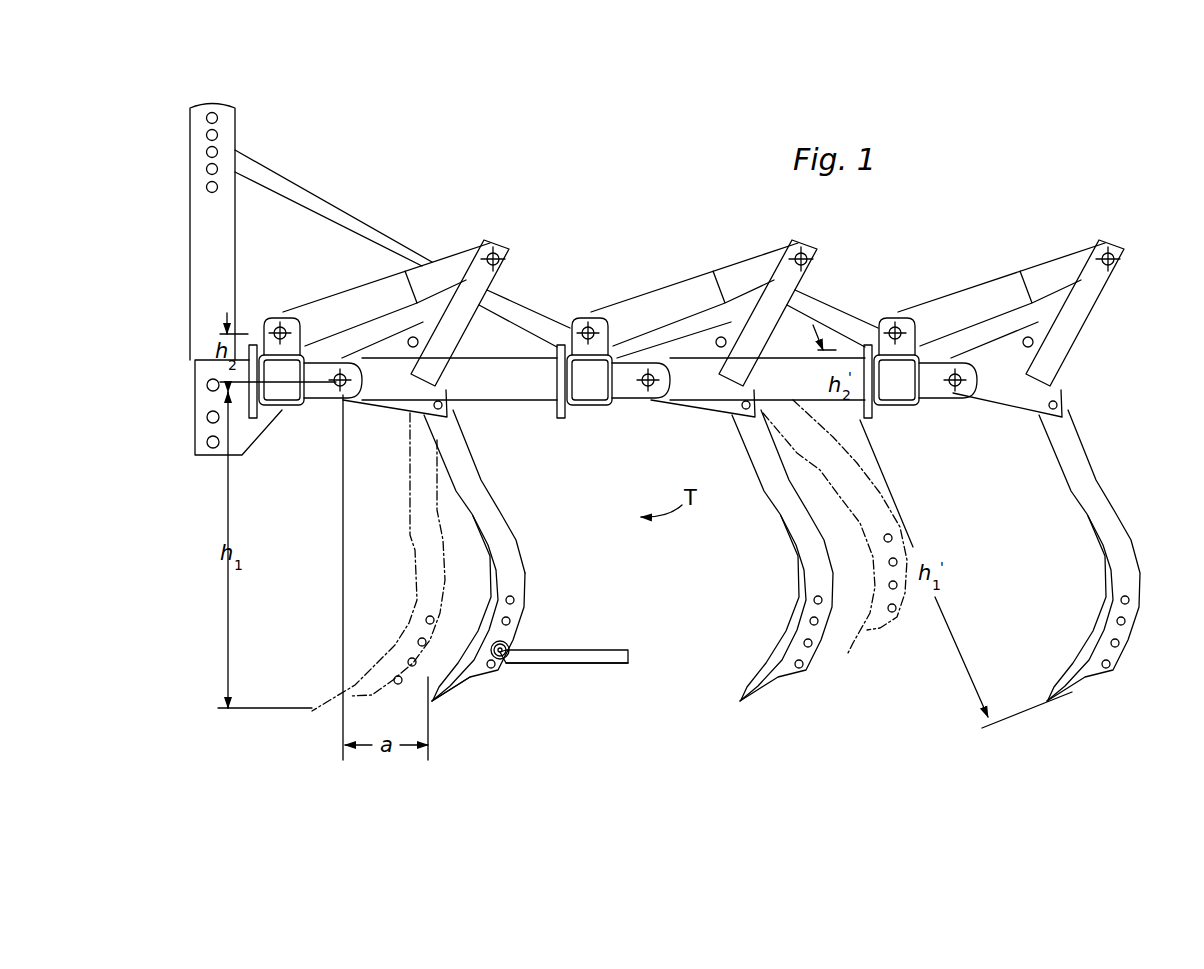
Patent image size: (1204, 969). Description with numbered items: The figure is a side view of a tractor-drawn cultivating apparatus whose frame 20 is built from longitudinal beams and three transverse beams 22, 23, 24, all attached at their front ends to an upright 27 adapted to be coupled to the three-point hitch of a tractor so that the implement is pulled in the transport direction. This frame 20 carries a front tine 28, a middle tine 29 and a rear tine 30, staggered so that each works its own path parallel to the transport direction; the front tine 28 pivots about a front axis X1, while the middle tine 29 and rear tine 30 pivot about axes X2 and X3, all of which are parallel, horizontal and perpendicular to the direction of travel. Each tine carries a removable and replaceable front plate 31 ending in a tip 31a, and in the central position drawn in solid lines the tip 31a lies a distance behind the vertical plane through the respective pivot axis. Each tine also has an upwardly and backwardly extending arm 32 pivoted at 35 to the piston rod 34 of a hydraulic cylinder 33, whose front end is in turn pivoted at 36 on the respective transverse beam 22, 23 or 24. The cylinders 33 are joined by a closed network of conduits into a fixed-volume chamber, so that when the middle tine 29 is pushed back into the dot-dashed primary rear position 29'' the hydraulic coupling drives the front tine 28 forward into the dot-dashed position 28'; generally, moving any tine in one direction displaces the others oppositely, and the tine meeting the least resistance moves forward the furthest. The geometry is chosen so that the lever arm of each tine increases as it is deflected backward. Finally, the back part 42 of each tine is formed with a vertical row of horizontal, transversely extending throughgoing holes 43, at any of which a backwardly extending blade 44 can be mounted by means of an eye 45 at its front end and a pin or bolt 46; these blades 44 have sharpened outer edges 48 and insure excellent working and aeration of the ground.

The frame 20 is at (518, 406).
The transverse beam 22 is at (283, 393).
The transverse beam 23 is at (590, 408).
The transverse beam 24 is at (903, 400).
The upright 27 is at (208, 342).
The front tine 28 is at (505, 555).
The forward position of front tine 28' is at (378, 562).
The middle tine 29 is at (777, 555).
The primary rear position of middle tine 29'' is at (850, 526).
The rear tine 30 is at (1084, 555).
The front plate 31 is at (494, 596).
The tip 31a is at (436, 704).
The arm 32 is at (495, 290).
The hydraulic cylinder 33 is at (360, 302).
The piston rod 34 is at (447, 270).
The pivot 35 is at (503, 247).
The front pivot 36 is at (278, 325).
The back part of tine 42 is at (528, 578).
The throughgoing holes 43 is at (509, 630).
The blade 44 is at (583, 665).
The eye 45 is at (506, 658).
The pin or bolt 46 is at (495, 648).
The sharpened outer edges 48 is at (605, 651).
The front axis X1 is at (342, 395).
The middle axis X2 is at (647, 406).
The rear axis X3 is at (955, 407).